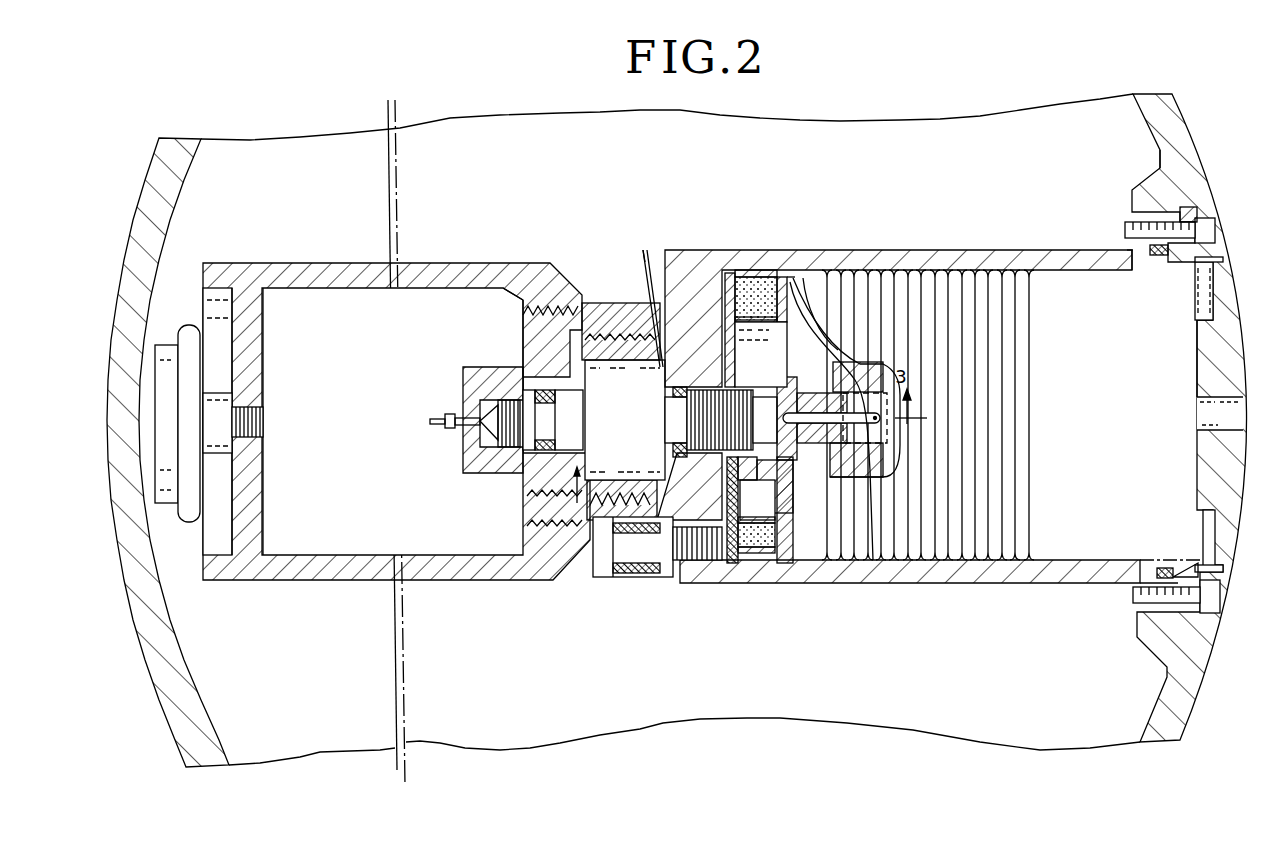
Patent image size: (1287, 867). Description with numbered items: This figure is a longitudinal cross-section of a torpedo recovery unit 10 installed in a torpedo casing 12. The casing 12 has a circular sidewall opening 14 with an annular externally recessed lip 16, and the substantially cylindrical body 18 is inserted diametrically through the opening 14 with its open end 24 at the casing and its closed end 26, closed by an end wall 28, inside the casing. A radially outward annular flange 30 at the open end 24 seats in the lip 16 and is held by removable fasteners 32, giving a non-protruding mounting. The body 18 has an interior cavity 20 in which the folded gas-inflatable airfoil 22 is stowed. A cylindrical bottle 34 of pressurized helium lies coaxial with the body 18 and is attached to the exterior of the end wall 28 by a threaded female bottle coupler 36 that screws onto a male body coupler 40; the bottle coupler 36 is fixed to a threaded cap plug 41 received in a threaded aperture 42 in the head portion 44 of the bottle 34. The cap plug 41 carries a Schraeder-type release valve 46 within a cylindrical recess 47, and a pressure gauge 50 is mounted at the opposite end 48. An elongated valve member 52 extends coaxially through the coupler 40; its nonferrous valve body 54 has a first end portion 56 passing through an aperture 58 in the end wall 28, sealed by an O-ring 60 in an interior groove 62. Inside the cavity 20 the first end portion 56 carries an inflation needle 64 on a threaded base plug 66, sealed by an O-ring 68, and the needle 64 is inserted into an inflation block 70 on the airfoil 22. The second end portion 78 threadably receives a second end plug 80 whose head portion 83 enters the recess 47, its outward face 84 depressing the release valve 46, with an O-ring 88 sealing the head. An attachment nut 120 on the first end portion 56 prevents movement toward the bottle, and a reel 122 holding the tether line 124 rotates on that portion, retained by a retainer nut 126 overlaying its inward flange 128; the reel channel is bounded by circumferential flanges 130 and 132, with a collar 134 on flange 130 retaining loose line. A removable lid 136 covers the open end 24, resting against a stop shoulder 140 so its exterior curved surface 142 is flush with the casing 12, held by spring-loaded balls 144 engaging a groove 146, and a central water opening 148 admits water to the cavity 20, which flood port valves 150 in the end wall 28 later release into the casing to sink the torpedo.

The torpedo recovery unit 10 is at (870, 148).
The torpedo casing 12 is at (1172, 112).
The circular sidewall opening 14 is at (1128, 246).
The annular externally recessed lip 16 is at (1165, 195).
The cylindrical body 18 is at (968, 250).
The interior cavity 20 is at (1083, 394).
The gas-inflatable airfoil 22 is at (1033, 341).
The open end 24 is at (1222, 280).
The closed end 26 is at (668, 305).
The end wall 28 is at (660, 292).
The annular flange 30 is at (1212, 212).
The removable fasteners 32 is at (1216, 226).
The bottle 34 is at (332, 263).
The female bottle coupler 36 is at (595, 303).
The male body coupler 40 is at (620, 333).
The threaded cap plug 41 is at (525, 335).
The interiorly threaded aperture 42 is at (520, 303).
The head portion 44 is at (543, 297).
The release valve 46 is at (478, 378).
The cylindrical recess 47 is at (523, 400).
The opposite end 48 is at (257, 376).
The pressure gauge 50 is at (165, 340).
The valve member 52 is at (572, 480).
The valve body 54 is at (567, 431).
The first end portion 56 is at (693, 432).
The aperture 58 is at (700, 330).
The O-ring 60 is at (675, 390).
The interior groove 62 is at (700, 420).
The inflation needle 64 is at (817, 417).
The threaded base plug 66 is at (770, 445).
The O-ring 68 is at (750, 455).
The inflation block 70 is at (868, 560).
The second end portion 78 is at (575, 402).
The second end plug 80 is at (520, 458).
The head portion 83 is at (503, 473).
The outward face 84 is at (530, 403).
The O-ring 88 is at (545, 455).
The attachment nut 120 is at (737, 375).
The reel 122 is at (798, 300).
The tether line 124 is at (835, 300).
The retainer nut 126 is at (735, 562).
The radially inward projecting flange 128 is at (728, 290).
The circumferential flange 130 is at (752, 290).
The circumferential flange 132 is at (788, 565).
The collar 134 is at (760, 565).
The lid 136 is at (1217, 356).
The stop shoulder 140 is at (1193, 263).
The exterior curved surface 142 is at (1242, 312).
The spring-loaded balls 144 is at (1224, 259).
The circumferential groove 146 is at (1222, 244).
The water opening 148 is at (1215, 416).
The flood port valve 150 is at (610, 525).